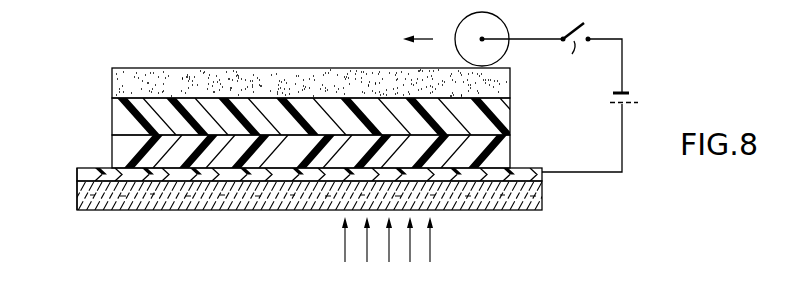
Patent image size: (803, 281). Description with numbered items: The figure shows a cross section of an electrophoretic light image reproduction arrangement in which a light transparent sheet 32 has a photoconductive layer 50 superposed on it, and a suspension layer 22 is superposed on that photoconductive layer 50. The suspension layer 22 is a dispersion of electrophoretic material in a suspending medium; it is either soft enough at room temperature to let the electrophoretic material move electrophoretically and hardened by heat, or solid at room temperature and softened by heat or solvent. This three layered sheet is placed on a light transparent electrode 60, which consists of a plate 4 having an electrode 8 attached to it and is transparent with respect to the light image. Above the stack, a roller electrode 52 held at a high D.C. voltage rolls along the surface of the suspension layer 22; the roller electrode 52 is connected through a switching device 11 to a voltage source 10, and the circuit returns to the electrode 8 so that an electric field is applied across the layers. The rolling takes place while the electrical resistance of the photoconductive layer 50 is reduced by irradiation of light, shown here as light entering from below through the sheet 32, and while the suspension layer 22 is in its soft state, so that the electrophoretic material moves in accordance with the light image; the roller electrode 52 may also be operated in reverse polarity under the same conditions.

The plate 4 is at (86, 196).
The electrode 8 is at (82, 176).
The voltage source 10 is at (628, 92).
The switching device 11 is at (576, 46).
The suspension layer 22 is at (125, 80).
The light transparent sheet 32 is at (128, 147).
The photoconductive layer 50 is at (130, 117).
The roller electrode 52 is at (490, 27).
The light transparent electrode 60 is at (76, 167).